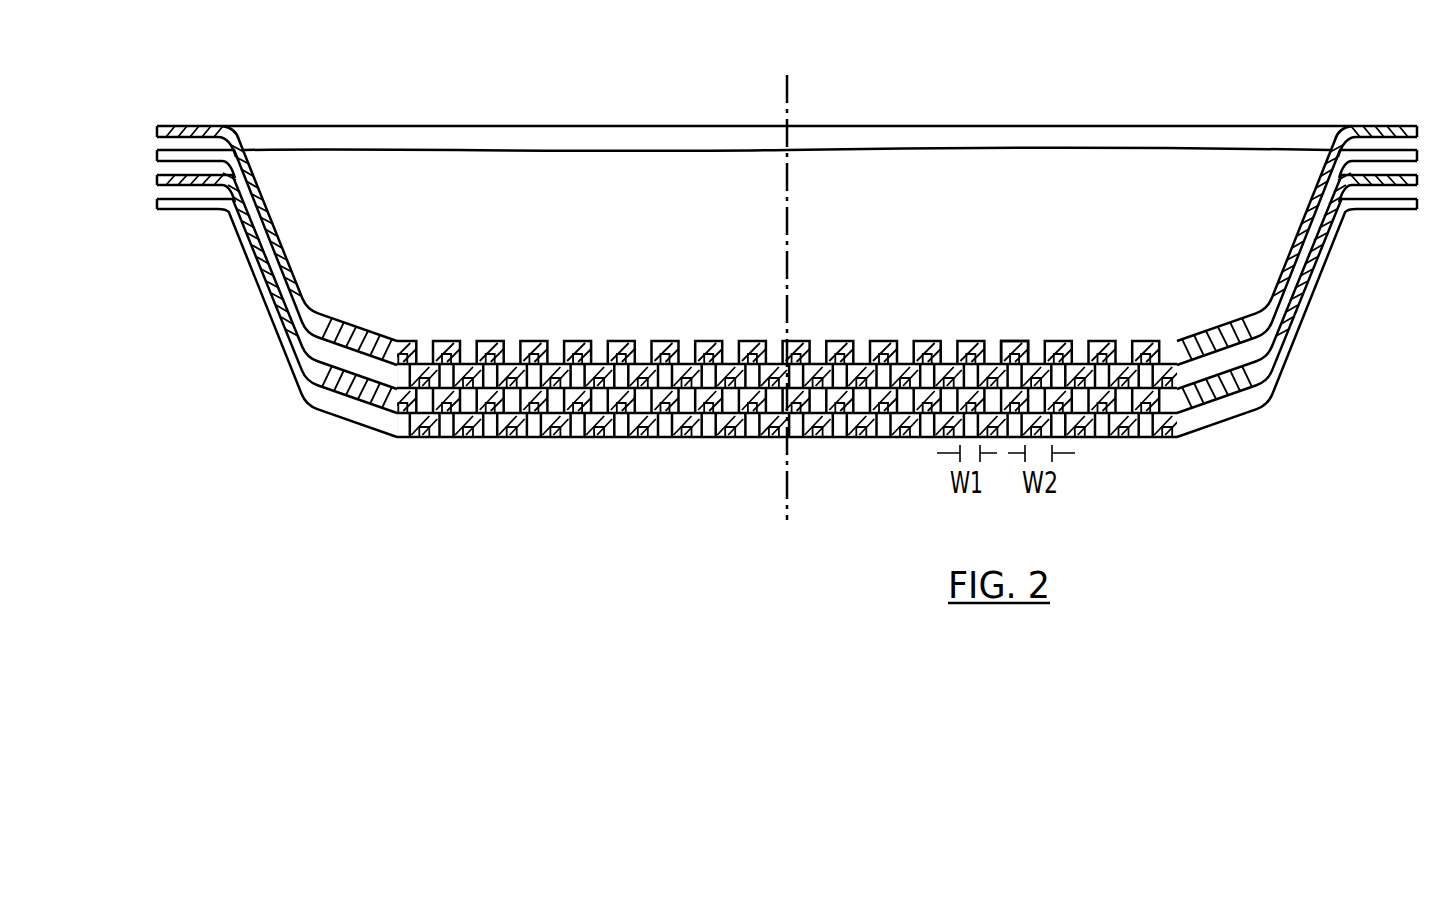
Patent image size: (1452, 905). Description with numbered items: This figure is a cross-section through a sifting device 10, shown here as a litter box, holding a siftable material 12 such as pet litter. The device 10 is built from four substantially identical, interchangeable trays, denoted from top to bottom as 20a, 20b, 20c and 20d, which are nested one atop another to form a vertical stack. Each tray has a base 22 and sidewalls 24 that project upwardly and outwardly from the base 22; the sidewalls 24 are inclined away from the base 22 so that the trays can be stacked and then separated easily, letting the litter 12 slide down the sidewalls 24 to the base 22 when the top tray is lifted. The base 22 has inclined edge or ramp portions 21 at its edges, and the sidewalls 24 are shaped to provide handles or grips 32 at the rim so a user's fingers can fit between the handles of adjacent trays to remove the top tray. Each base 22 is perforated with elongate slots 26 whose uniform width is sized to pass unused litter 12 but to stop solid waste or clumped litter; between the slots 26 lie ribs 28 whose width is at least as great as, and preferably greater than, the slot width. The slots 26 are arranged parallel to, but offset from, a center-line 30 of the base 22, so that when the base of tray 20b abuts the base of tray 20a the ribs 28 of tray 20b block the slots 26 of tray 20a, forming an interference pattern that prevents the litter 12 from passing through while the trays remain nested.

The device 10 is at (98, 131).
The siftable material 12 is at (893, 232).
The top tray 20a is at (1262, 330).
The second tray 20b is at (1252, 355).
The third tray 20c is at (1246, 378).
The bottom tray 20d is at (1236, 409).
The ramp portion 21 is at (328, 424).
The base 22 is at (1018, 329).
The sidewalls 24 is at (266, 296).
The slots 26 is at (471, 352).
The ribs 28 is at (539, 340).
The center-line 30 is at (789, 488).
The handles 32 is at (152, 176).